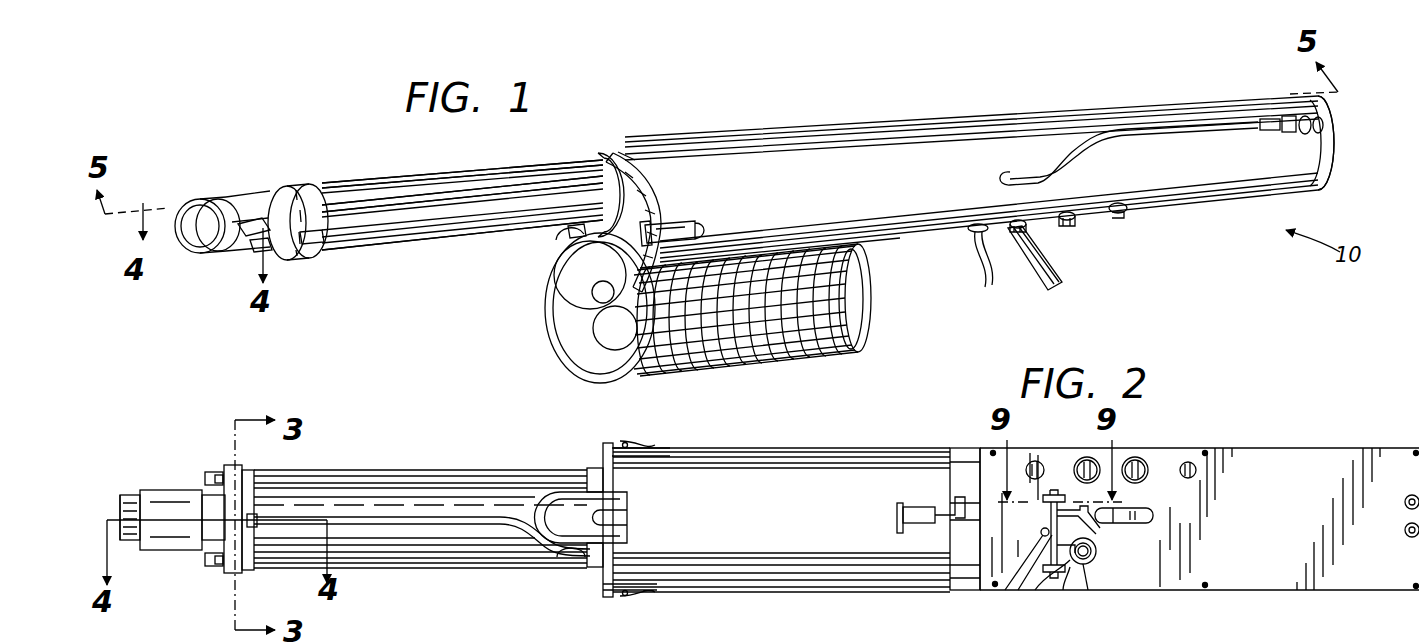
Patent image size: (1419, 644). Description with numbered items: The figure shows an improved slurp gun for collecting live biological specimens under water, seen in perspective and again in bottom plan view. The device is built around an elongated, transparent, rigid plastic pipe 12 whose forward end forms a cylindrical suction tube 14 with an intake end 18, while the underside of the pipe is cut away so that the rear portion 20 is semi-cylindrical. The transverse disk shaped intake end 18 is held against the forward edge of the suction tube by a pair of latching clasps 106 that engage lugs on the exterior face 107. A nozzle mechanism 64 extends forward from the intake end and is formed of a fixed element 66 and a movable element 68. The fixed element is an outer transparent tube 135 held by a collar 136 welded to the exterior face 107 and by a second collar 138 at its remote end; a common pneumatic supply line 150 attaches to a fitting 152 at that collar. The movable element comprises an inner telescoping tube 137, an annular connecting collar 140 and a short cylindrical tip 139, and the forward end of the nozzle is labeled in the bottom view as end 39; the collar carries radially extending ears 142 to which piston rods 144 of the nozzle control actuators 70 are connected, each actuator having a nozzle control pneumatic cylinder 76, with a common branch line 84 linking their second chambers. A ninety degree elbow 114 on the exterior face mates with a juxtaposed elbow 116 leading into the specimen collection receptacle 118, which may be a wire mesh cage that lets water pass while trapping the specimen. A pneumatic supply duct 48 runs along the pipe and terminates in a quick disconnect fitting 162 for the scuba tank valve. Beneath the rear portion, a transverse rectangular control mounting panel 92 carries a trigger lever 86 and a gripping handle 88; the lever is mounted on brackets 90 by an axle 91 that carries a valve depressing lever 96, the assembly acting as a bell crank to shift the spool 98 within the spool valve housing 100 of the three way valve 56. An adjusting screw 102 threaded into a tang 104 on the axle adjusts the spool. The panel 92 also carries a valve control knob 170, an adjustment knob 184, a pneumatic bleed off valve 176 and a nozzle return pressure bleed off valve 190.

In FIG. 1, the pipe 12 is at (893, 120).
In FIG. 1, the suction tube 14 is at (806, 178).
In FIG. 2, the suction tube 14 is at (770, 472).
In FIG. 1, the intake end 18 is at (655, 190).
In FIG. 1, the rear portion 20 is at (1318, 160).
In FIG. 2, the tip end 39 is at (128, 495).
In FIG. 1, the pneumatic supply duct 48 is at (1122, 133).
In FIG. 2, the three way valve 56 is at (1098, 562).
In FIG. 1, the nozzle mechanism 64 is at (383, 262).
In FIG. 1, the fixed element 66 is at (565, 165).
In FIG. 2, the fixed element 66 is at (510, 500).
In FIG. 1, the movable element 68 is at (270, 194).
In FIG. 2, the movable element 68 is at (200, 508).
In FIG. 1, the nozzle control actuator 70 is at (470, 198).
In FIG. 2, the nozzle control actuator 70 is at (500, 470).
In FIG. 1, the nozzle control pneumatic cylinder 76 is at (426, 192).
In FIG. 2, the nozzle control pneumatic cylinder 76 is at (470, 470).
In FIG. 1, the common branch line 84 is at (556, 240).
In FIG. 2, the common branch line 84 is at (590, 560).
In FIG. 1, the trigger lever 86 is at (980, 276).
In FIG. 2, the trigger lever 86 is at (1088, 528).
In FIG. 1, the gripping handle 88 is at (1048, 284).
In FIG. 2, the gripping handle 88 is at (1140, 508).
In FIG. 2, the mounting bracket 90 is at (1065, 495).
In FIG. 2, the axle 91 is at (1058, 572).
In FIG. 2, the control mounting panel 92 is at (1335, 590).
In FIG. 2, the valve depressing lever 96 is at (1070, 590).
In FIG. 2, the spool 98 is at (1086, 568).
In FIG. 2, the spool valve housing 100 is at (1098, 552).
In FIG. 2, the adjusting screw 102 is at (990, 560).
In FIG. 2, the tang 104 is at (1028, 580).
In FIG. 1, the latching clasp 106 is at (672, 220).
In FIG. 2, the latching clasp 106 is at (628, 440).
In FIG. 1, the exterior face 107 is at (640, 178).
In FIG. 1, the elbow 114 is at (548, 276).
In FIG. 1, the elbow 116 is at (560, 322).
In FIG. 2, the elbow 116 is at (600, 500).
In FIG. 1, the specimen collection receptacle 118 is at (778, 358).
In FIG. 1, the outer tube 135 is at (530, 172).
In FIG. 2, the outer tube 135 is at (238, 470).
In FIG. 1, the collar 136 is at (620, 158).
In FIG. 2, the collar 136 is at (590, 465).
In FIG. 1, the inner telescoping tube 137 is at (262, 252).
In FIG. 1, the collar 138 is at (306, 190).
In FIG. 2, the collar 138 is at (236, 574).
In FIG. 1, the tip 139 is at (196, 252).
In FIG. 1, the annular connecting collar 140 is at (225, 200).
In FIG. 2, the annular connecting collar 140 is at (160, 548).
In FIG. 1, the ear 142 is at (248, 234).
In FIG. 2, the ear 142 is at (195, 473).
In FIG. 1, the piston rod 144 is at (300, 246).
In FIG. 2, the piston rod 144 is at (218, 474).
In FIG. 1, the common pneumatic supply line 150 is at (420, 248).
In FIG. 2, the common pneumatic supply line 150 is at (360, 500).
In FIG. 2, the fitting 152 is at (256, 512).
In FIG. 1, the quick disconnect fitting 162 is at (1324, 122).
In FIG. 1, the valve control knob 170 is at (1074, 226).
In FIG. 2, the valve control knob 170 is at (1140, 458).
In FIG. 1, the pneumatic bleed off valve 176 is at (1128, 212).
In FIG. 2, the pneumatic bleed off valve 176 is at (1197, 472).
In FIG. 1, the adjustment knob 184 is at (1028, 240).
In FIG. 2, the adjustment knob 184 is at (1082, 457).
In FIG. 1, the nozzle return pressure bleed off valve 190 is at (972, 236).
In FIG. 2, the nozzle return pressure bleed off valve 190 is at (1033, 460).